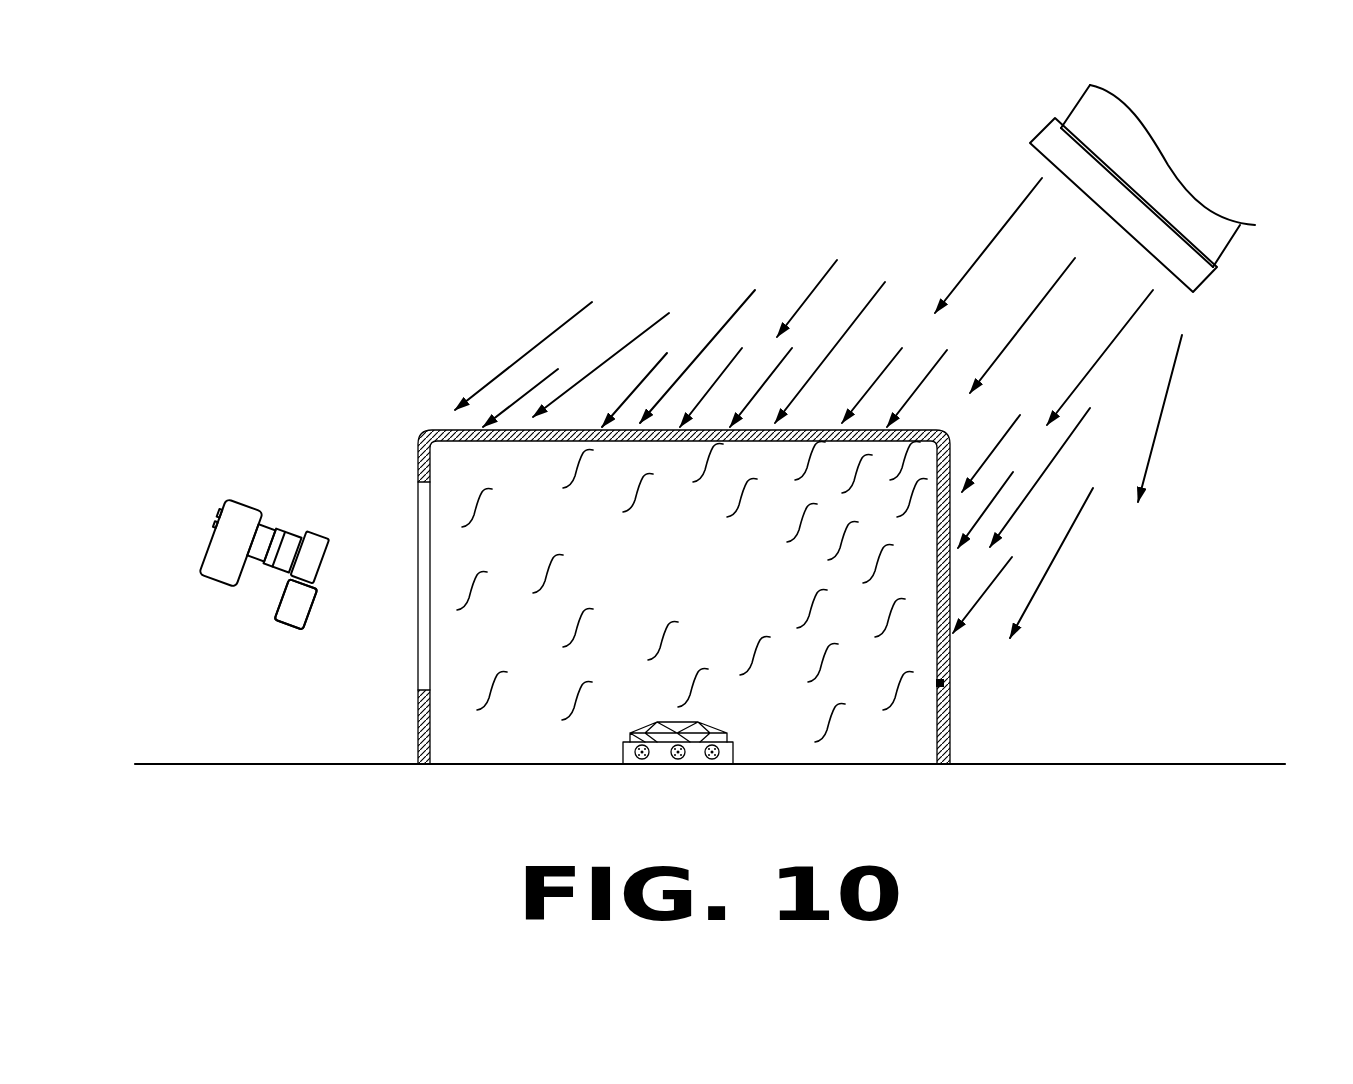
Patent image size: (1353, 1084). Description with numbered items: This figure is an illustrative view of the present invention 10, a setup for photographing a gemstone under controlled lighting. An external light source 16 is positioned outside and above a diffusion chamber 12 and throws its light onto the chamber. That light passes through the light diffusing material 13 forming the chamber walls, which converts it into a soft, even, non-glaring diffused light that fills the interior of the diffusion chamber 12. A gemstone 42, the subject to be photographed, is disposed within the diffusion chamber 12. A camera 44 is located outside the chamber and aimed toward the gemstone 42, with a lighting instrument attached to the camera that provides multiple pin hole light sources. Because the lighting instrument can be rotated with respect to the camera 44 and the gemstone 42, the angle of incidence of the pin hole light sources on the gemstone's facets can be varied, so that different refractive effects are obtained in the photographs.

The present invention 10 is at (275, 207).
The diffusion chamber 12 is at (822, 283).
The light diffusing material 13 is at (948, 683).
The external light source 16 is at (1130, 190).
The gemstone 42 is at (692, 752).
The camera 44 is at (258, 508).